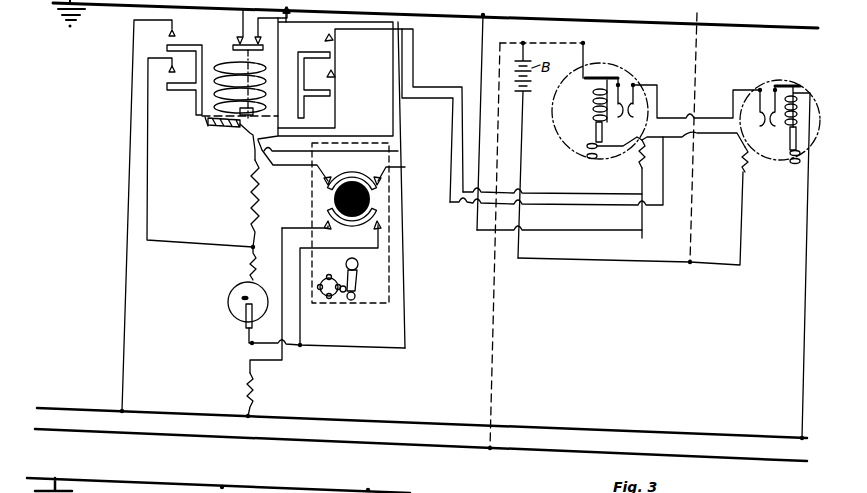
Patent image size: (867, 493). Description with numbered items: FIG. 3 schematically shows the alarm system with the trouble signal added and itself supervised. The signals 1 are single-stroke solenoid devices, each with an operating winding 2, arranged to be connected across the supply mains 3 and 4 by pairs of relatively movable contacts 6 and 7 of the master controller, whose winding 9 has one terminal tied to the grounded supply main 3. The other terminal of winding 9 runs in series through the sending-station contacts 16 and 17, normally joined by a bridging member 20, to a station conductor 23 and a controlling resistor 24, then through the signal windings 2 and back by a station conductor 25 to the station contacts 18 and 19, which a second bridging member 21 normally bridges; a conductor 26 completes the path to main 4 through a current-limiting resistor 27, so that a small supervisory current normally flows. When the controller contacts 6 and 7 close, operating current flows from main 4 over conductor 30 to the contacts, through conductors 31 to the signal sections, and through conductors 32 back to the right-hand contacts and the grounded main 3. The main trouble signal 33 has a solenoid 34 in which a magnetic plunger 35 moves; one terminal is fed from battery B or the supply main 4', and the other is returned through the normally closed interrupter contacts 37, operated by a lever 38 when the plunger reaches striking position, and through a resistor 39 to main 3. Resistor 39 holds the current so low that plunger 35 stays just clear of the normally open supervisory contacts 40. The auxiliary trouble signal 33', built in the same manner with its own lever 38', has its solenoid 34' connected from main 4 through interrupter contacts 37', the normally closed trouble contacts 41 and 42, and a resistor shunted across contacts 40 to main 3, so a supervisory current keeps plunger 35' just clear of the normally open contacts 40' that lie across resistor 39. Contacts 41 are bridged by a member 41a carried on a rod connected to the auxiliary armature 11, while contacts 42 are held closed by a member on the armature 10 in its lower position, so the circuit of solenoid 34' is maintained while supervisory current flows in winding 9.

The signal 1 is at (234, 288).
The operating winding 2 is at (242, 303).
The supply main 3 is at (437, 14).
The supply main 4 is at (422, 413).
The supply main 4' is at (421, 426).
The contact 6 is at (207, 53).
The contact 7 is at (169, 66).
The winding 9 is at (214, 103).
The armature 10 is at (235, 127).
The auxiliary armature 11 is at (250, 152).
The stationary contact 16 is at (324, 181).
The stationary contact 17 is at (381, 183).
The stationary contact 18 is at (380, 226).
The stationary contact 19 is at (325, 224).
The bridging member 20 is at (387, 167).
The second bridging member 21 is at (336, 230).
The station conductor 23 is at (373, 153).
The controlling resistor 24 is at (251, 207).
The station conductor 25 is at (373, 251).
The conductor 26 is at (283, 322).
The current-limiting resistor 27 is at (254, 391).
The conductor 30 is at (128, 198).
The conductor 31 is at (147, 169).
The conductor 32 is at (390, 303).
The main trouble signal 33 is at (600, 106).
The auxiliary trouble signal 33' is at (780, 108).
The solenoid 34 is at (570, 107).
The solenoid 34' is at (782, 82).
The magnetic plunger 35 is at (588, 132).
The plunger 35' is at (771, 165).
The interrupter contacts 37 is at (688, 88).
The interrupter contacts 37' is at (743, 98).
The lever 38 is at (606, 83).
The lever 38' is at (792, 246).
The resistor 39 is at (641, 165).
The supervisory contacts 40 is at (612, 160).
The contacts 40' is at (788, 177).
The trouble contacts 41 is at (243, 24).
The bridging member 41a is at (236, 43).
The trouble contacts 42 is at (211, 129).